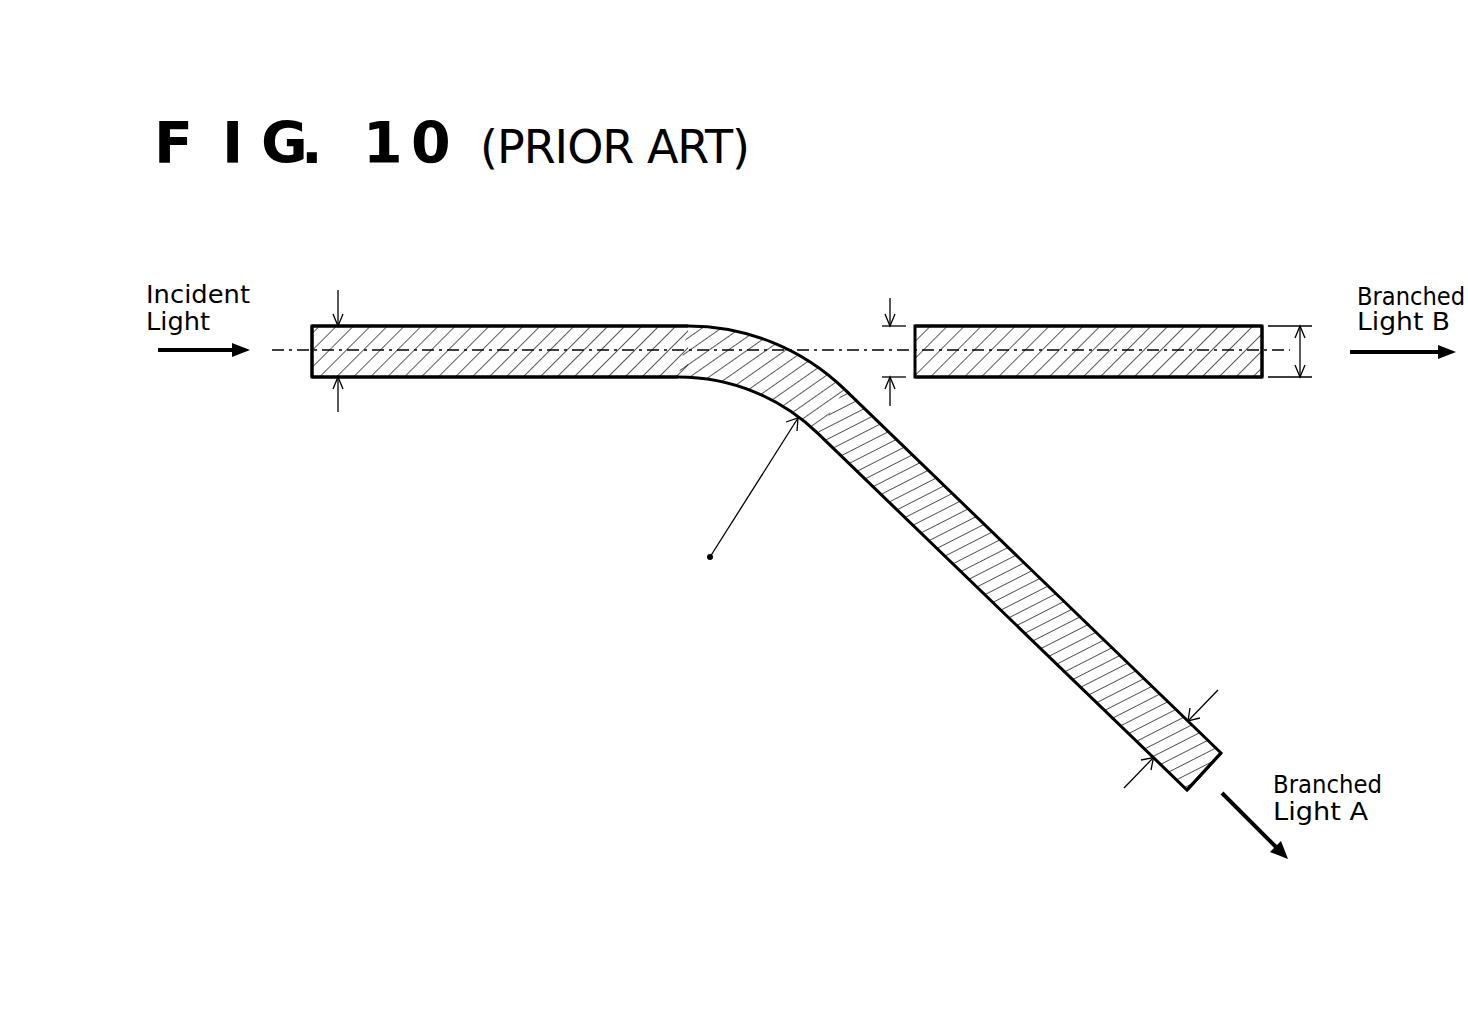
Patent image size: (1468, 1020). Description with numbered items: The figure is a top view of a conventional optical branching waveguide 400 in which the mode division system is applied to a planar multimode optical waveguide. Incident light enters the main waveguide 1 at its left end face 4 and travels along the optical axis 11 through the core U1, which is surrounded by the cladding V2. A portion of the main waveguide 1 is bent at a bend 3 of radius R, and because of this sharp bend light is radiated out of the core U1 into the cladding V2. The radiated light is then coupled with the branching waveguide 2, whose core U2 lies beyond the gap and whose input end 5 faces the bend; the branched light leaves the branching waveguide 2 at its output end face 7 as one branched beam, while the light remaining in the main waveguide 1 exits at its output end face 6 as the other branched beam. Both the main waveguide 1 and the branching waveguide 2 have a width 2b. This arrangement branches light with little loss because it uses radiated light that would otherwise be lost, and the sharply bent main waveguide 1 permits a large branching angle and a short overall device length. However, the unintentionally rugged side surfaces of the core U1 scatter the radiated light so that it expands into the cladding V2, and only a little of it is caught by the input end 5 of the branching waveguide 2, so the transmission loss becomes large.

The optical branching waveguide 400 is at (1388, 238).
The main waveguide 1 is at (437, 332).
The branching waveguide 2 is at (1118, 330).
The bent portion of first waveguide 3 is at (787, 383).
The incident end face 4 is at (310, 364).
The input end 5 is at (912, 352).
The output end face for branched light A 6 is at (1205, 780).
The output end face for branched light B 7 is at (1265, 363).
The optical axis 11 is at (280, 347).
The waveguide width 2b is at (832, 521).
The bend radius R is at (752, 489).
The core U1 is at (583, 335).
The upper side face of second waveguide U2 is at (982, 337).
The cladding V2 is at (787, 411).